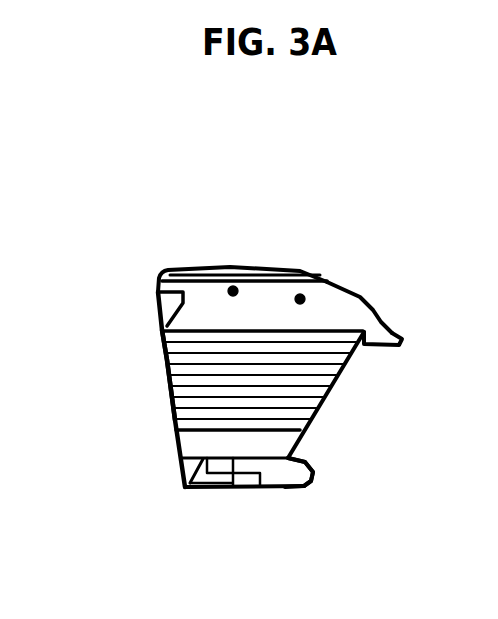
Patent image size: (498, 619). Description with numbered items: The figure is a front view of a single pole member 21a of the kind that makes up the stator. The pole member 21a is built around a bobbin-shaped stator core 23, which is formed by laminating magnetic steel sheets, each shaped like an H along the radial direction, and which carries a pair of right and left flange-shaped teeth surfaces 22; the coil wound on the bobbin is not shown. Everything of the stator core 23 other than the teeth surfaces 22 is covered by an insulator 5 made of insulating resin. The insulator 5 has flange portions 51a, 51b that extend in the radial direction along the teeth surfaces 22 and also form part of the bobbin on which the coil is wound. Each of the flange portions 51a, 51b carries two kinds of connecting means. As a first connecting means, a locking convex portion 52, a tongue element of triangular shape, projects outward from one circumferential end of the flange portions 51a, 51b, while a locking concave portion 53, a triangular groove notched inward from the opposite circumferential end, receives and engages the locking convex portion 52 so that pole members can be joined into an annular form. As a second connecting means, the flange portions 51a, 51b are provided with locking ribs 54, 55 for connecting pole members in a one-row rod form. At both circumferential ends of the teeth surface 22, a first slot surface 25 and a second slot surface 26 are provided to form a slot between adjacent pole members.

The insulator 5 is at (288, 245).
The pole member 21a is at (353, 208).
The teeth surfaces 22 is at (310, 388).
The stator core 23 is at (151, 380).
The first slot surface 25 is at (163, 352).
The second slot surface 26 is at (350, 362).
The flange portion 51a is at (338, 297).
The flange portion 51b is at (282, 487).
The locking convex portion 52 is at (390, 325).
The locking concave portion 53 is at (160, 305).
The locking rib 54 is at (166, 255).
The locking rib 55 is at (183, 505).